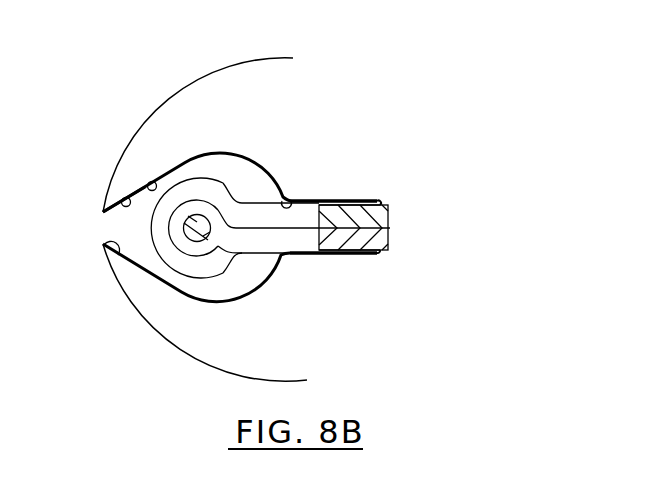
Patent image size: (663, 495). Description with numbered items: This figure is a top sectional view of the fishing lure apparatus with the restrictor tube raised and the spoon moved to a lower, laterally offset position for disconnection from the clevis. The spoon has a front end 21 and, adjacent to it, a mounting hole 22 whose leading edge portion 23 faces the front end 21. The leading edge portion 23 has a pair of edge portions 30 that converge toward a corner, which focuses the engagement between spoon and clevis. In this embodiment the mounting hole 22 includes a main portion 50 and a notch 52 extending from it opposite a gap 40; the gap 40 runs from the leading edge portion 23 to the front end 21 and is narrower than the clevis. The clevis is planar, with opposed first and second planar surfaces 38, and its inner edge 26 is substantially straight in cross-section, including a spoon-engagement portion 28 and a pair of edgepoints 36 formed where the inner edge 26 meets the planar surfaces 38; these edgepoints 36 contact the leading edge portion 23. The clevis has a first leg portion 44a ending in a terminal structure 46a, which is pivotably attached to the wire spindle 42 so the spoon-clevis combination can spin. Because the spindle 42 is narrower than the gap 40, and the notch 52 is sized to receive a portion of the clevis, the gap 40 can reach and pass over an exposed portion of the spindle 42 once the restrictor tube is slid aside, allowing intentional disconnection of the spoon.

The front end 21 is at (106, 197).
The mounting hole 22 is at (252, 166).
The leading edge portion 23 is at (130, 196).
The inner edge 26 is at (312, 215).
The spoon-engagement portion 28 is at (389, 217).
The edge portions 30 is at (151, 182).
The edgepoints 36 is at (321, 203).
The planar surfaces 38 is at (375, 202).
The gap 40 is at (100, 233).
The spindle 42 is at (198, 229).
The first clevis leg portion 44a is at (257, 240).
The terminal structure 46a is at (188, 190).
The main portion 50 is at (213, 287).
The notch 52 is at (286, 195).